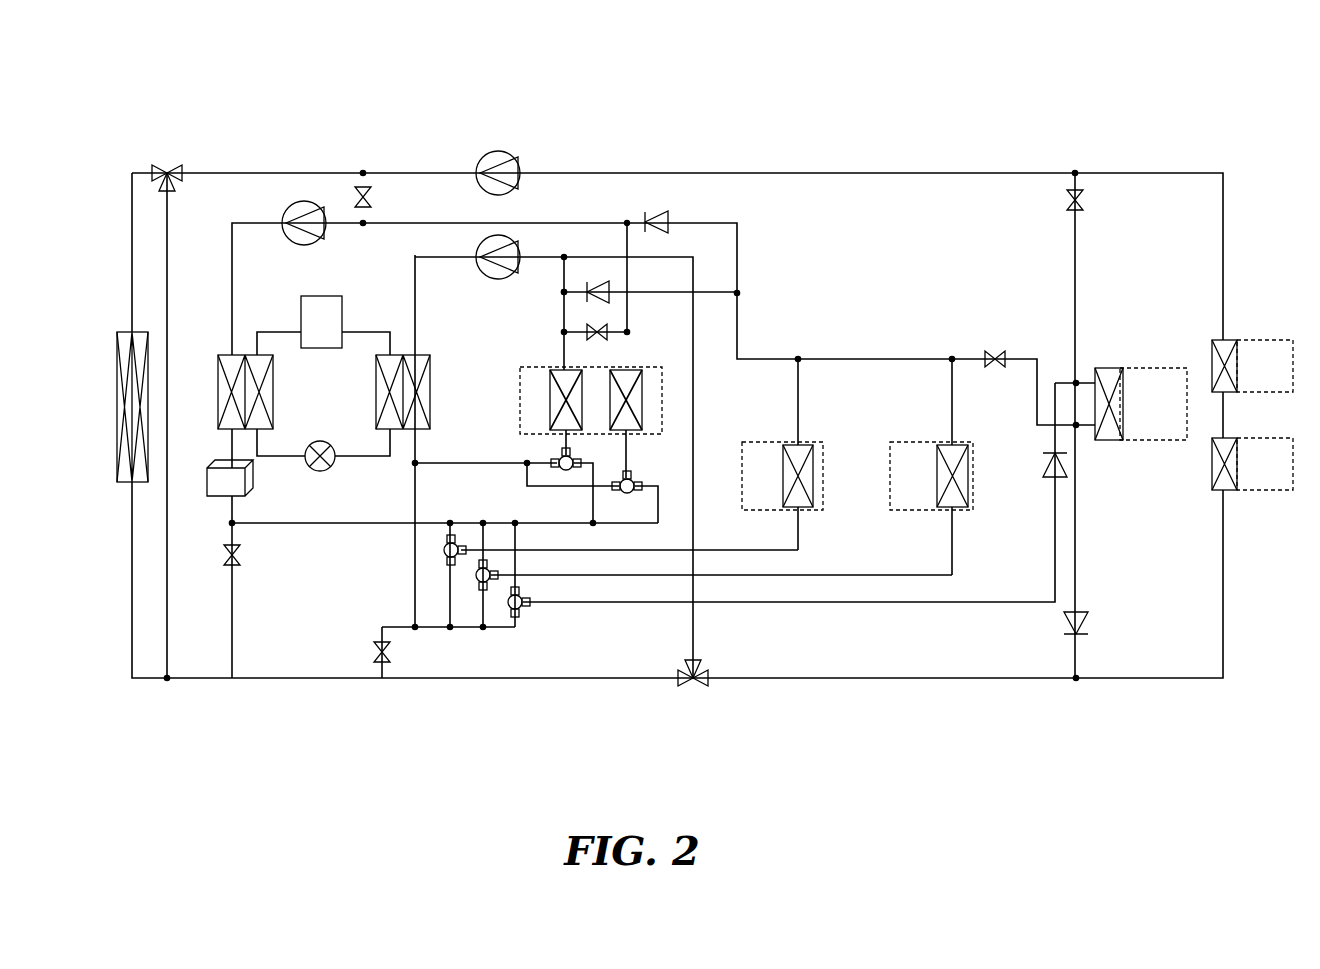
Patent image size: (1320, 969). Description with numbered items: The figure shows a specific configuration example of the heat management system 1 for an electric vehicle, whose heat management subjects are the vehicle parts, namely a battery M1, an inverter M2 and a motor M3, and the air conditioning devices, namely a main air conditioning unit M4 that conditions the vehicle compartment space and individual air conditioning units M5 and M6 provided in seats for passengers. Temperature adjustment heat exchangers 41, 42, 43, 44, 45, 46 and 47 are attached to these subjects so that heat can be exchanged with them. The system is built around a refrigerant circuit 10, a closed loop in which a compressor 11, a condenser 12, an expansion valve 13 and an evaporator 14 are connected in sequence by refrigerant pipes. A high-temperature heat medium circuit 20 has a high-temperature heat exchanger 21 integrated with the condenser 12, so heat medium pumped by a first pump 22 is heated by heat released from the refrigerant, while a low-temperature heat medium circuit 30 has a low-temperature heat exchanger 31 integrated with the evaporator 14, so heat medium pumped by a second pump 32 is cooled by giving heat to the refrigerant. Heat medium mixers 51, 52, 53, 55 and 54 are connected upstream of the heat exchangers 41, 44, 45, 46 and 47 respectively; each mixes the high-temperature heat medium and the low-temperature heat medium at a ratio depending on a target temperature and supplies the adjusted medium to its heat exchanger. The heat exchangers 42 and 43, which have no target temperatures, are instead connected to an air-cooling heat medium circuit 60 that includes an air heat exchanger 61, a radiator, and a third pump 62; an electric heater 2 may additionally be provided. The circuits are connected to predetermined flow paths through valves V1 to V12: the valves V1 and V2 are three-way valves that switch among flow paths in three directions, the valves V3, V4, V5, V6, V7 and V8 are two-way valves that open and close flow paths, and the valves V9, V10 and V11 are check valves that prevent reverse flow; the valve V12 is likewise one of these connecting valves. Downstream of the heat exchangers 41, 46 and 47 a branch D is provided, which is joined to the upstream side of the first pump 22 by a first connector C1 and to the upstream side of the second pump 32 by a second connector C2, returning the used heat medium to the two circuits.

The heat management system 1 is at (992, 106).
The air-cooling heat medium circuit 60 is at (850, 171).
The air heat exchanger 61 is at (118, 334).
The third pump 62 is at (513, 158).
The three-way valve V1 is at (176, 167).
The three-way valve V2 is at (693, 687).
The two-way valve V3 is at (241, 558).
The two-way valve V4 is at (372, 198).
The two-way valve V5 is at (374, 646).
The two-way valve V6 is at (598, 336).
The two-way valve V7 is at (995, 352).
The two-way valve V8 is at (1084, 201).
The check valve V9 is at (669, 221).
The check valve V10 is at (598, 281).
The check valve V11 is at (1043, 466).
The valve V12 is at (1082, 612).
The high-temperature heat medium circuit 20 is at (251, 222).
The high-temperature heat exchanger 21 is at (218, 357).
The first pump 22 is at (322, 212).
The low-temperature heat medium circuit 30 is at (430, 256).
The low-temperature heat exchanger 31 is at (419, 355).
The second pump 32 is at (517, 247).
The refrigerant circuit 10 is at (381, 330).
The compressor 11 is at (300, 316).
The condenser 12 is at (273, 428).
The expansion valve 13 is at (320, 472).
The evaporator 14 is at (377, 359).
The electric heater 2 is at (210, 497).
The first connector C1 is at (628, 219).
The second connector C2 is at (562, 292).
The branch D is at (740, 293).
The main air conditioning unit M4 is at (519, 378).
The temperature adjustment heat exchanger 44 is at (549, 412).
The temperature adjustment heat exchanger 45 is at (643, 412).
The heat medium mixer 52 is at (558, 455).
The heat medium mixer 53 is at (637, 483).
The heat medium mixer 51 is at (523, 609).
The heat medium mixer 54 is at (490, 583).
The heat medium mixer 55 is at (446, 561).
The individual air conditioning unit M5 is at (748, 441).
The temperature adjustment heat exchanger 46 is at (806, 445).
The individual air conditioning unit M6 is at (898, 441).
The temperature adjustment heat exchanger 47 is at (962, 445).
The temperature adjustment heat exchanger 41 is at (1104, 367).
The battery M1 is at (1165, 367).
The temperature adjustment heat exchanger 42 is at (1212, 340).
The inverter M2 is at (1265, 339).
The temperature adjustment heat exchanger 43 is at (1212, 490).
The motor M3 is at (1265, 491).